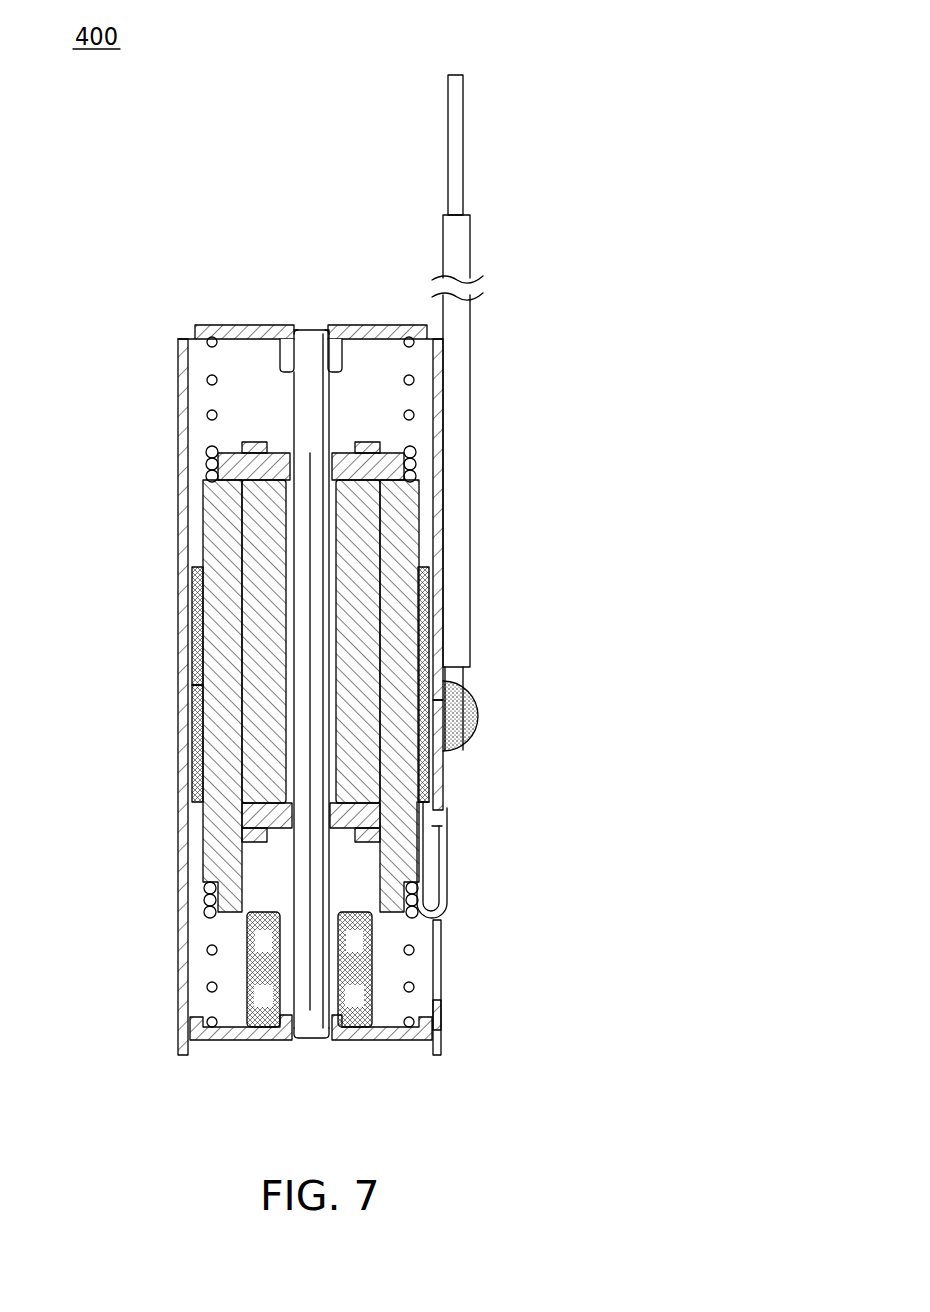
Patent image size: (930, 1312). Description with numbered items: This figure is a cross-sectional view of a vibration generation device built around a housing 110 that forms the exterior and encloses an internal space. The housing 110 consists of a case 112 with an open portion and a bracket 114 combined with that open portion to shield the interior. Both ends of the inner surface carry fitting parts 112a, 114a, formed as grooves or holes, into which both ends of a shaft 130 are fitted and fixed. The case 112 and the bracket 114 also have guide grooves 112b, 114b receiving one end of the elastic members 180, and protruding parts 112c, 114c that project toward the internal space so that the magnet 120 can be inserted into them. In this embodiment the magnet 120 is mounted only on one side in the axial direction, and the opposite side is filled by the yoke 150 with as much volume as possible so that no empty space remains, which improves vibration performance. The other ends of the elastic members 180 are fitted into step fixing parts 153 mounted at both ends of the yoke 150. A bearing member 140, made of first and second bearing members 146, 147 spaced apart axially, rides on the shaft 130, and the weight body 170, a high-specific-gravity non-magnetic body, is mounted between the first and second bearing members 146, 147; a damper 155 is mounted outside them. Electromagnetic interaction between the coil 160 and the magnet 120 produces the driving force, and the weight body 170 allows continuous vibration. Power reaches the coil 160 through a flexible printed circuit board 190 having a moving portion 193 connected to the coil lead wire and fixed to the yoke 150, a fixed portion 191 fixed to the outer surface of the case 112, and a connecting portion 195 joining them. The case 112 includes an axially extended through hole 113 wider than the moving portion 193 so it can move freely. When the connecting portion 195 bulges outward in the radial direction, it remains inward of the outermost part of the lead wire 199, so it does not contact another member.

The housing 110 is at (360, 673).
The case 112 is at (358, 627).
The fitting part 112a is at (317, 343).
The guide groove 112b is at (217, 342).
The protruding part 112c is at (278, 343).
The through hole 113 is at (437, 970).
The bracket 114 is at (324, 1072).
The fitting part 114a is at (313, 1037).
The guide groove 114b is at (220, 1030).
The protruding part 114c is at (295, 1040).
The magnet 120 is at (247, 967).
The shaft 130 is at (313, 408).
The bearing member 140 is at (138, 641).
The first bearing member 146 is at (265, 470).
The second bearing member 147 is at (225, 812).
The yoke 150 is at (400, 537).
The step fixing part 153 is at (207, 463).
The damper 155 is at (247, 440).
The coil 160 is at (425, 652).
The weight body 170 is at (346, 652).
The elastic member 180 is at (207, 380).
The flexible printed circuit board 190 is at (522, 809).
The fixed portion 191 is at (447, 765).
The moving portion 193 is at (417, 790).
The connecting portion 195 is at (558, 782).
The lead wire 199 is at (462, 343).